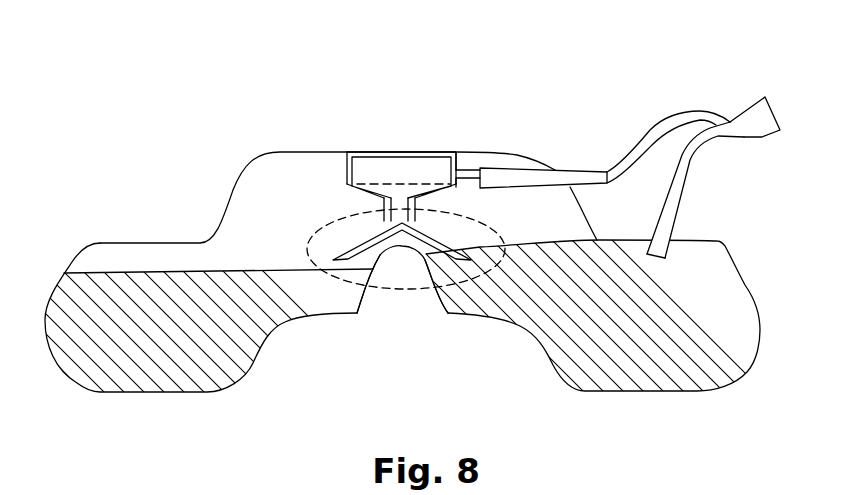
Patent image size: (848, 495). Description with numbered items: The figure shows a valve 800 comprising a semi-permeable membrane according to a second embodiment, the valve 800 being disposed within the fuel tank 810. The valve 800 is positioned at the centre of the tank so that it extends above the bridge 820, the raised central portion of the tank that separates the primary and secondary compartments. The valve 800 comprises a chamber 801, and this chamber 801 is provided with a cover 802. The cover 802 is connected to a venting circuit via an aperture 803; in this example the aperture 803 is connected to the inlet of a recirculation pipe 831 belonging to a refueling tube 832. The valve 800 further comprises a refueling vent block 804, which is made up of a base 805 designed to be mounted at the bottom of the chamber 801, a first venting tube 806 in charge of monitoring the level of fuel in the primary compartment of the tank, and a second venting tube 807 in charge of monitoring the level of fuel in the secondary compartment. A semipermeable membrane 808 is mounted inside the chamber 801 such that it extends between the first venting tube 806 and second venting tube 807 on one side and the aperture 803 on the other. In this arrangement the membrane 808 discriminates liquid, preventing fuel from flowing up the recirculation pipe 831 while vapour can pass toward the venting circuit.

The valve 800 is at (419, 108).
The chamber 801 is at (397, 170).
The cover 802 is at (438, 152).
The aperture 803 is at (457, 172).
The refueling vent block 804 is at (300, 242).
The base 805 is at (384, 212).
The first venting tube 806 is at (430, 285).
The second venting tube 807 is at (373, 268).
The semipermeable membrane 808 is at (378, 178).
The fuel tank 810 is at (725, 232).
The bridge 820 is at (403, 270).
The recirculation pipe 831 is at (680, 111).
The refueling tube 832 is at (727, 135).